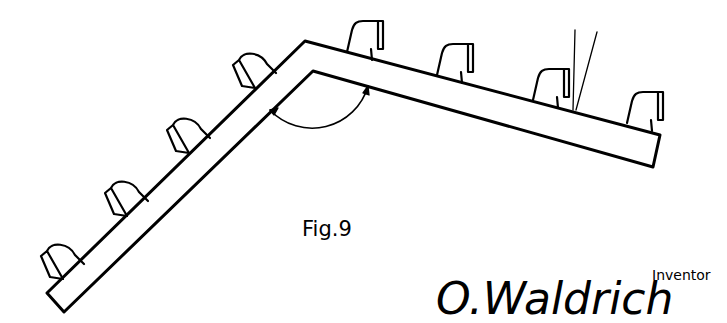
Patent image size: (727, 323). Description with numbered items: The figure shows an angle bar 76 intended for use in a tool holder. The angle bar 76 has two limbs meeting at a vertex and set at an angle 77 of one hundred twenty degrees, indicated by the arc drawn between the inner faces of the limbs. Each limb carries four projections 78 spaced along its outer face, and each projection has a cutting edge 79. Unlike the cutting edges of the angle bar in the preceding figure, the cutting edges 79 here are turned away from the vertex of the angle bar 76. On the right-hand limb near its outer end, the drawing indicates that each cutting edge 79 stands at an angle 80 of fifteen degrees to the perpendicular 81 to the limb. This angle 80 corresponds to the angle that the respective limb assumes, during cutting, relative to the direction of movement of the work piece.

The angle bar 76 is at (310, 62).
The angle 77 is at (320, 128).
The projections 78 is at (352, 147).
The cutting edges 79 is at (360, 44).
The angle 80 is at (594, 42).
The perpendicular to the limb 81 is at (593, 60).